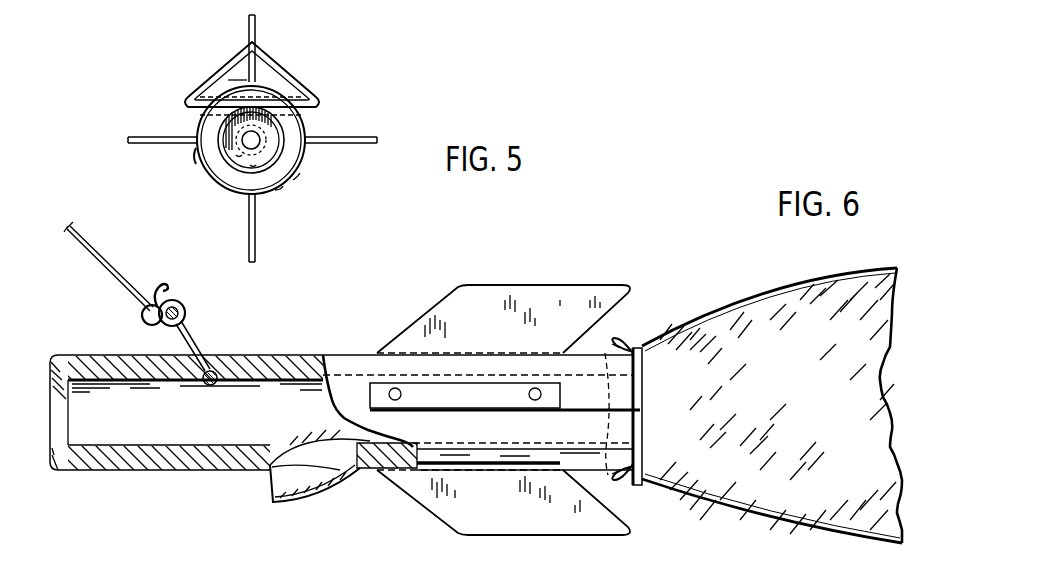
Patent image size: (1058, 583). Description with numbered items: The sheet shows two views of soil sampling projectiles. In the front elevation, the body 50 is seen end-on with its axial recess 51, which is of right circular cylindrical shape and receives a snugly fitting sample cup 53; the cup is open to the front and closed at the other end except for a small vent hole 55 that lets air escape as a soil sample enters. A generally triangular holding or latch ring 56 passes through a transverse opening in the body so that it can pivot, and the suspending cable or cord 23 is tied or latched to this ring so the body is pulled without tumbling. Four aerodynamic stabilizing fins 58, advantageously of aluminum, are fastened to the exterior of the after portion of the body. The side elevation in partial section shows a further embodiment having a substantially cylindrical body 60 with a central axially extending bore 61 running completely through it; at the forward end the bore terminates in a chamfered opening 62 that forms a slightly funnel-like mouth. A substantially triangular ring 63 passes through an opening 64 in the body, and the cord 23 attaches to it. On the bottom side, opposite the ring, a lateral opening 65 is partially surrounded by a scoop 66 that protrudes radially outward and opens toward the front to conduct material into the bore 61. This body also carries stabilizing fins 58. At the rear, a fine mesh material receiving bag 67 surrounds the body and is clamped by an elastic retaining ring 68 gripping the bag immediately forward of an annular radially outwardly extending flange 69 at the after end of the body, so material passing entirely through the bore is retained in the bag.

In FIG. 6, the suspending cable or cord 23 is at (98, 264).
In FIG. 5, the body 50 is at (208, 152).
In FIG. 5, the axial recess 51 is at (250, 167).
In FIG. 5, the sample cup 53 is at (237, 158).
In FIG. 5, the vent hole 55 is at (262, 139).
In FIG. 5, the holding or latch ring 56 is at (282, 66).
In FIG. 5, the aerodynamic stabilizing fins 58 is at (247, 25).
In FIG. 6, the aerodynamic stabilizing fins 58 is at (568, 306).
In FIG. 6, the substantially cylindrical body 60 is at (340, 362).
In FIG. 6, the central axially extending bore 61 is at (121, 445).
In FIG. 6, the chamfered opening 62 is at (55, 446).
In FIG. 6, the ring 63 is at (190, 346).
In FIG. 6, the opening 64 is at (210, 387).
In FIG. 6, the lateral opening 65 is at (317, 441).
In FIG. 6, the scoop 66 is at (302, 496).
In FIG. 6, the material receiving bag 67 is at (735, 298).
In FIG. 6, the elastic retaining ring 68 is at (624, 346).
In FIG. 6, the annular radially outwardly extending flange 69 is at (645, 392).